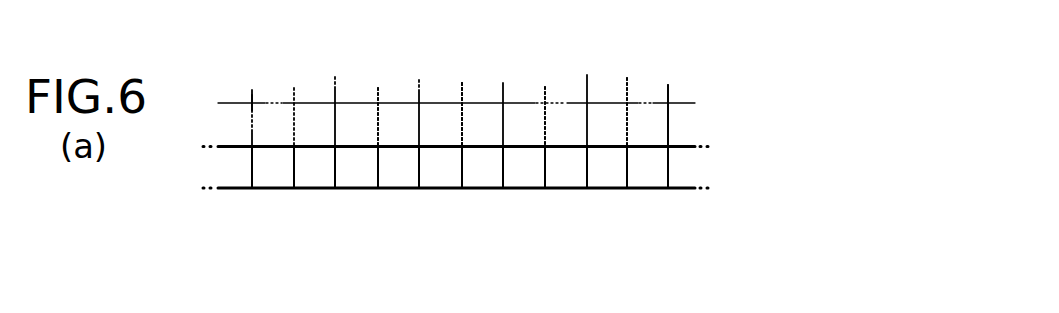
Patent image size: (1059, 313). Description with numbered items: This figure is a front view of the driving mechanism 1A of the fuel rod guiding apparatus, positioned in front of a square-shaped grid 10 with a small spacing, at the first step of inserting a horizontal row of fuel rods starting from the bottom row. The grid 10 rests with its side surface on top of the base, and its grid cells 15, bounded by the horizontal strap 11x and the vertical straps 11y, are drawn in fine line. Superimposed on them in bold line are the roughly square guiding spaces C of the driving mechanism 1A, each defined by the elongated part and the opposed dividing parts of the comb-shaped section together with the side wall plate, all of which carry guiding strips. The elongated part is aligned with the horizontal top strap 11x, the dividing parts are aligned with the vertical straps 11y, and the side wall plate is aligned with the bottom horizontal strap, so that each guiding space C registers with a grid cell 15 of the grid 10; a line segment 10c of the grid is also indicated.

The driving mechanism 1A is at (680, 141).
The grid 10 is at (209, 108).
The line segment 10c is at (267, 117).
The grid cells 15 is at (396, 118).
The horizontal top strap 11x is at (482, 100).
The vertical straps 11y is at (628, 93).
The guiding spaces C is at (313, 153).